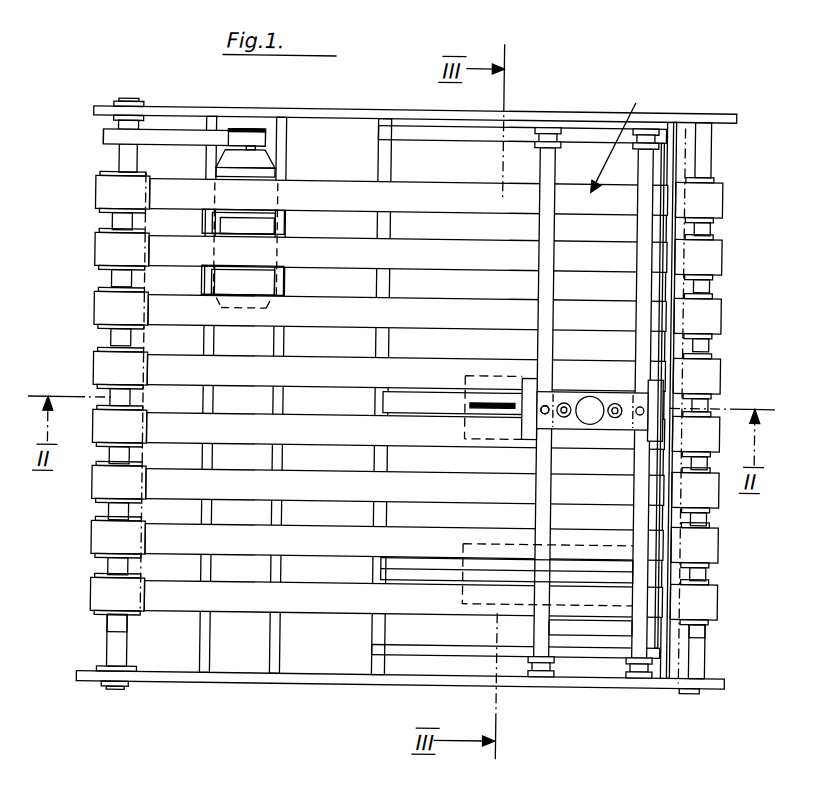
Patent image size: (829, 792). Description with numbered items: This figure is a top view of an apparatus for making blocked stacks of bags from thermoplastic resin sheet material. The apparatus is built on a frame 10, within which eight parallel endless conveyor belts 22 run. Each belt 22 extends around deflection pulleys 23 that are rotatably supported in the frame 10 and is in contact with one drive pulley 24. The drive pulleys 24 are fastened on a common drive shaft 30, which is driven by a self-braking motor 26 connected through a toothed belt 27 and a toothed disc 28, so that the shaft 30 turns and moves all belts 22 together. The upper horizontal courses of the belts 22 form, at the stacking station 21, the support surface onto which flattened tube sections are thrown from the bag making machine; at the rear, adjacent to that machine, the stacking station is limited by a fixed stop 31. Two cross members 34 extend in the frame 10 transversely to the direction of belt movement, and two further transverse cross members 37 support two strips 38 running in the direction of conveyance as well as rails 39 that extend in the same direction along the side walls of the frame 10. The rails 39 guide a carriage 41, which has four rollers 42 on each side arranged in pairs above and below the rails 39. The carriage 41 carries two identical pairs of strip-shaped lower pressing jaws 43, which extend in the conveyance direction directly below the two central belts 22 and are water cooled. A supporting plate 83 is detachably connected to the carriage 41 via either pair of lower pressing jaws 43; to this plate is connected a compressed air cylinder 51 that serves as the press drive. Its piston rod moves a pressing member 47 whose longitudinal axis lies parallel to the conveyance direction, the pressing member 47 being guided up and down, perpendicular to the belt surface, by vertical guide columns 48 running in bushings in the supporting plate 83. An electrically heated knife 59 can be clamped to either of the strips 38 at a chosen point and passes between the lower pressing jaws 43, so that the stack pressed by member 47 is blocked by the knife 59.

The frame 10 is at (597, 117).
The stacking station 21 is at (624, 132).
The conveyor belts 22 is at (317, 310).
The deflection pulleys 23 is at (718, 236).
The drive pulleys 24 is at (104, 223).
The self-braking motor 26 is at (260, 163).
The toothed belt 27 is at (170, 136).
The toothed disc 28 is at (100, 134).
The drive shaft 30 is at (116, 158).
The fixed stop 31 is at (670, 163).
The cross members 34 is at (273, 648).
The cross members 37 is at (375, 640).
The strips 38 is at (383, 402).
The rails 39 is at (515, 136).
The carriage 41 is at (654, 636).
The rollers 42 is at (552, 128).
The lower pressing jaws 43 is at (463, 386).
The pressing member 47 is at (583, 388).
The vertical guide columns 48 is at (562, 404).
The compressed air cylinder 51 is at (589, 420).
The knife 59 is at (480, 395).
The supporting plate 83 is at (543, 416).